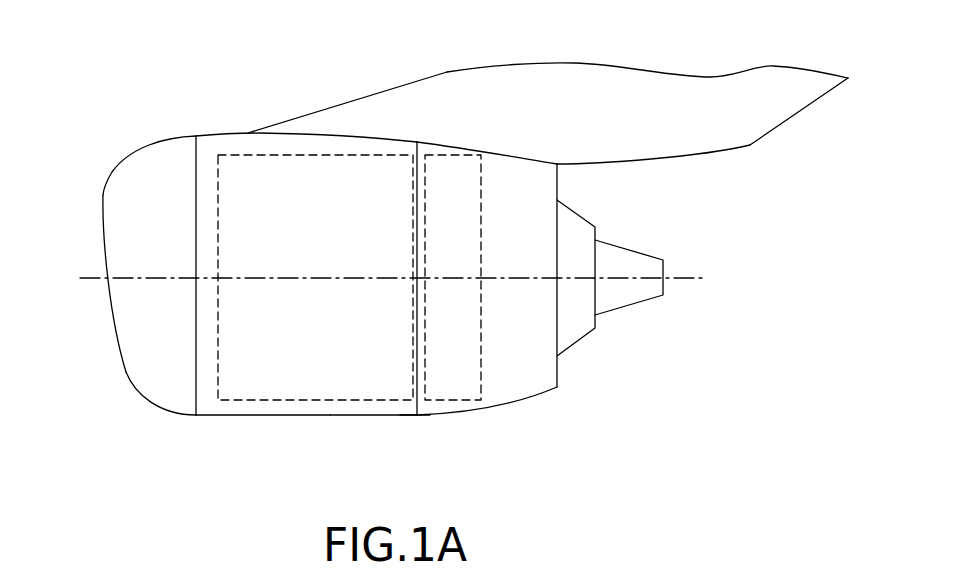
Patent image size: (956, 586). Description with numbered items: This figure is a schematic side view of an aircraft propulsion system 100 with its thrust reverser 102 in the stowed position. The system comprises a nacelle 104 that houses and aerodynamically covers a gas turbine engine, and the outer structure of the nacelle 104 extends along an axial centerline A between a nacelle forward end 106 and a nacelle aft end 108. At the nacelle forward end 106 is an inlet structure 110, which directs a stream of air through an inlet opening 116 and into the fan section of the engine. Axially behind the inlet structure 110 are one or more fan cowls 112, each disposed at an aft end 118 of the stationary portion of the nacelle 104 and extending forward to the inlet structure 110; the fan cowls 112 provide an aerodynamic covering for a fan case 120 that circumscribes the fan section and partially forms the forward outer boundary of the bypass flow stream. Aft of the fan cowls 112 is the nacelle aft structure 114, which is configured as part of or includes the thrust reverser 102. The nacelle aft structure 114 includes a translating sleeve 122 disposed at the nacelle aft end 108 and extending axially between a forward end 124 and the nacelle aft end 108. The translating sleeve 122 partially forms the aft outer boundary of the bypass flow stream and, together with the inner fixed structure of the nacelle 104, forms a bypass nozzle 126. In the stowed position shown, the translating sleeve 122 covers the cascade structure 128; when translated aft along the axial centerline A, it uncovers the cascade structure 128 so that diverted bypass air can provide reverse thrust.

The aircraft propulsion system 100 is at (100, 90).
The thrust reverser 102 is at (417, 436).
The nacelle 104 is at (208, 142).
The nacelle forward end 106 is at (103, 185).
The nacelle aft end 108 is at (557, 175).
The inlet structure 110 is at (126, 372).
The fan cowl 112 is at (206, 415).
The nacelle aft structure 114 is at (530, 368).
The inlet opening 116 is at (104, 245).
The aft end of stationary portion 118 is at (417, 407).
The fan case 120 is at (255, 400).
The translating sleeve 122 is at (557, 368).
The forward end of translating sleeve 124 is at (417, 382).
The bypass nozzle 126 is at (557, 193).
The cascade structure 128 is at (447, 153).
The axial centerline A is at (693, 276).